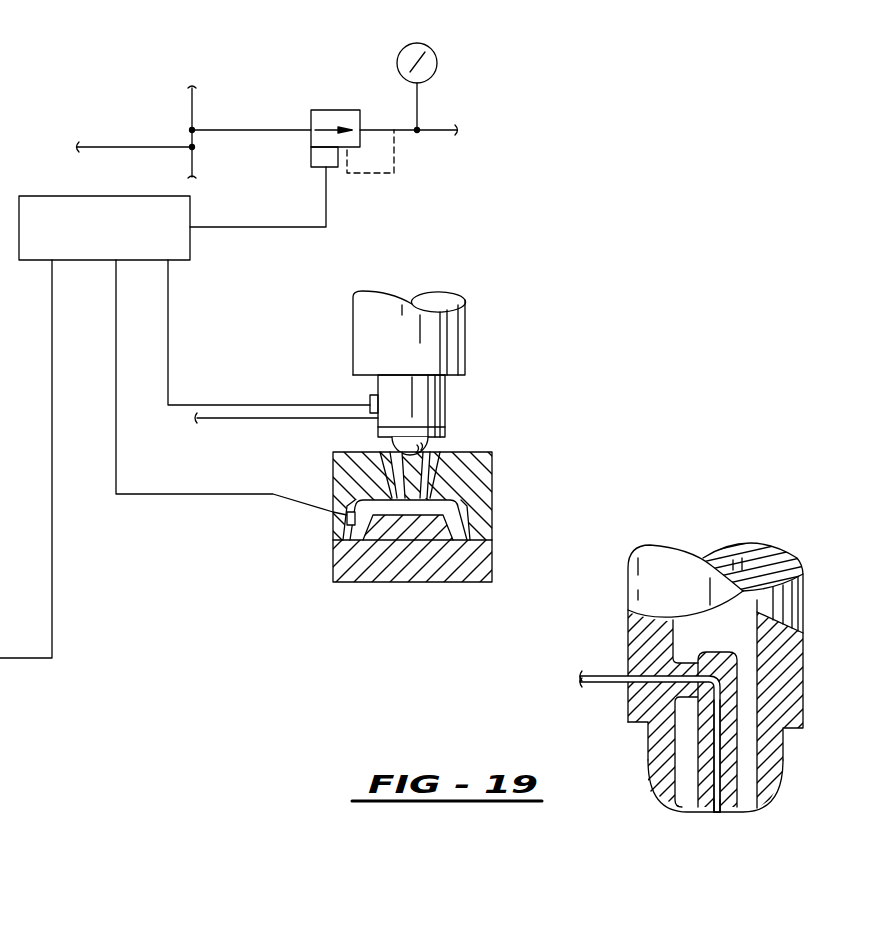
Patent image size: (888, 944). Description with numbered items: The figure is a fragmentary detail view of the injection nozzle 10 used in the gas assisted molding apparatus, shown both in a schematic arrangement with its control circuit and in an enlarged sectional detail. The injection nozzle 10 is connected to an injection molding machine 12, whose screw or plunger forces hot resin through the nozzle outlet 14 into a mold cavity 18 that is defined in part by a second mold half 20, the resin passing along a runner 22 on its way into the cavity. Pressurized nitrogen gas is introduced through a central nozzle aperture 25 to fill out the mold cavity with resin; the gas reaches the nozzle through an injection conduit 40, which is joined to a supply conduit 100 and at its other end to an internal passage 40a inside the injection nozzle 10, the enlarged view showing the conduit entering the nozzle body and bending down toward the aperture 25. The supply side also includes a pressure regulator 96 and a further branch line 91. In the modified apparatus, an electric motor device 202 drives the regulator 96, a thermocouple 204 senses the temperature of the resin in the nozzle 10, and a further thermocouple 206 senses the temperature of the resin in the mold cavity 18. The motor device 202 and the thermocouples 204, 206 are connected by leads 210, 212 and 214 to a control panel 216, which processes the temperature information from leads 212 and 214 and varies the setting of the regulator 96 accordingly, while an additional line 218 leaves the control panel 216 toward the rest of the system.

The injection nozzle 10 is at (452, 413).
The injection molding machine 12 is at (446, 338).
The nozzle outlet 14 is at (700, 816).
The mold cavity 18 is at (464, 526).
The second mold half 20 is at (493, 482).
The runner 22 is at (493, 557).
The central nozzle aperture 25 is at (722, 818).
The injection conduit 40 is at (325, 420).
The internal passage 40a is at (722, 770).
The supply lines 91 is at (116, 147).
The pressure regulator 96 is at (355, 98).
The conduit 100 is at (245, 130).
The electric motor device 202 is at (309, 158).
The thermocouple 204 is at (368, 400).
The thermocouple 206 is at (334, 523).
The lead 210 is at (250, 227).
The lead 212 is at (168, 345).
The lead 214 is at (116, 470).
The control panel 216 is at (118, 237).
The output line 218 is at (52, 628).